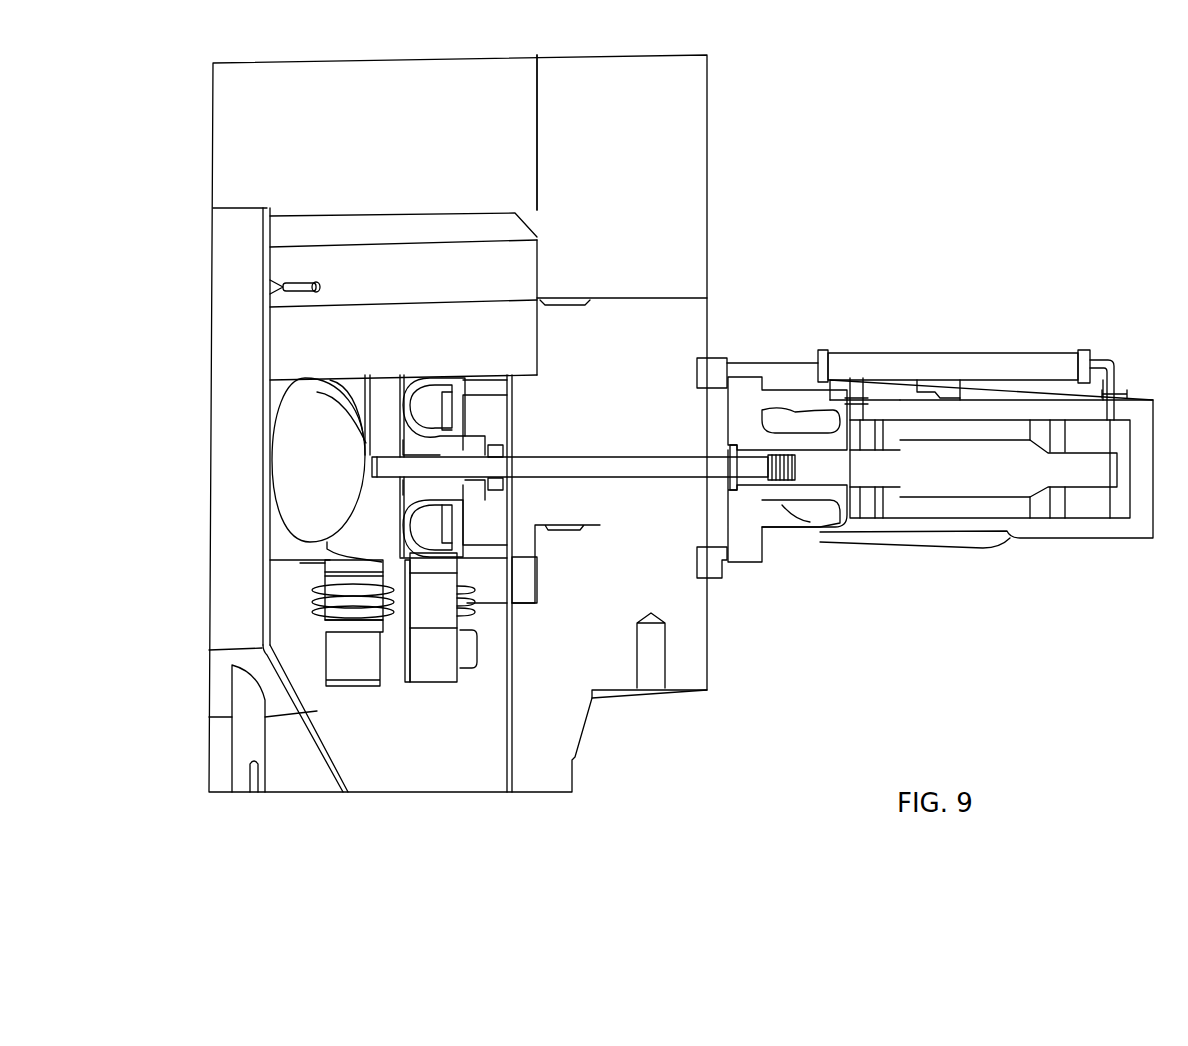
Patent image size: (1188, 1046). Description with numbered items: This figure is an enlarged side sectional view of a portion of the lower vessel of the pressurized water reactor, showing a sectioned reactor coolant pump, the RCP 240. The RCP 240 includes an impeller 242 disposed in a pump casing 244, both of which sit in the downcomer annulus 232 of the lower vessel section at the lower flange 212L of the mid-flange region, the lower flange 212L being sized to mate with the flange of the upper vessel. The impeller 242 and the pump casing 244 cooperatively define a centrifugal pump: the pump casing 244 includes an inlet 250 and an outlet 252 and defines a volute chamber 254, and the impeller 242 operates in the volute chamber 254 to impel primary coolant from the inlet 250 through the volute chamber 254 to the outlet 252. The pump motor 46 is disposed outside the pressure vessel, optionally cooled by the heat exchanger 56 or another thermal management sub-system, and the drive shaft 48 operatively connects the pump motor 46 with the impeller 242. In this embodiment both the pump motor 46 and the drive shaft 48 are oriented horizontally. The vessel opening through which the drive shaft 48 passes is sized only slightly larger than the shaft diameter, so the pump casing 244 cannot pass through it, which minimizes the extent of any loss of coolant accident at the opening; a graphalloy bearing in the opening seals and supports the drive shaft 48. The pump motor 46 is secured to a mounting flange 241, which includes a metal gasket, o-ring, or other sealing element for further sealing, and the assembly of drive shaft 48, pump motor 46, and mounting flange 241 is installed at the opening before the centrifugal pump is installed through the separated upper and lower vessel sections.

The downcomer annulus 232 is at (460, 765).
The drive shaft 48 is at (604, 470).
The inlet 250 is at (345, 395).
The volute chamber 254 is at (430, 385).
The impeller 242 is at (460, 520).
The pump casing 244 is at (497, 407).
The outlet 252 is at (435, 650).
The lower flange 212L is at (685, 318).
The mounting flange 241 is at (787, 495).
The pump motor 46 is at (900, 545).
The heat exchanger 56 is at (1033, 365).
The RCP 240 is at (988, 673).